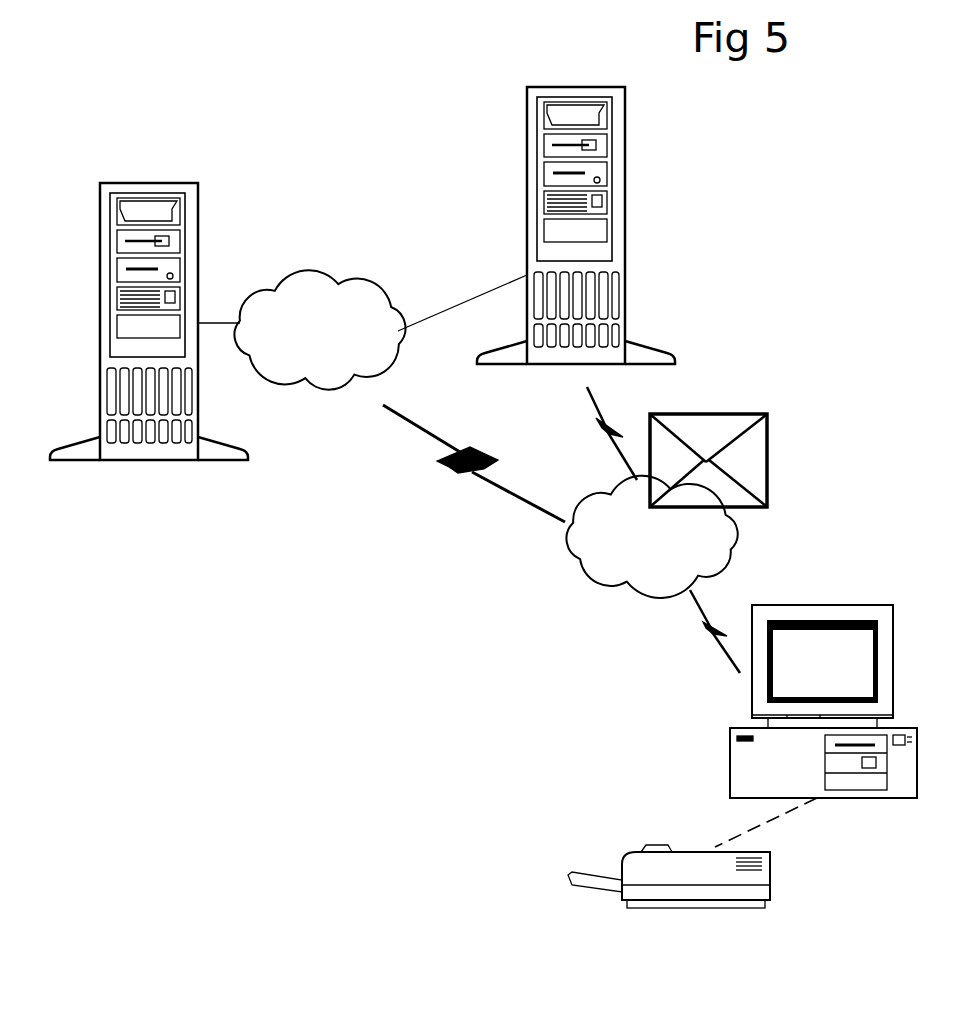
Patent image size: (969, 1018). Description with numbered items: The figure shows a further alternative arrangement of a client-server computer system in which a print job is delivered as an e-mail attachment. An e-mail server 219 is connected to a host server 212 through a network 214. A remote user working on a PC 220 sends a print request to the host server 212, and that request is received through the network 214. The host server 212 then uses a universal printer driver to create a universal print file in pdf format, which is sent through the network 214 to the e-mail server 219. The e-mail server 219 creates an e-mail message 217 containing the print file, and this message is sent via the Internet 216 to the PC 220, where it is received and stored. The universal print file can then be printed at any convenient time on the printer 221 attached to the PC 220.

The host server 212 is at (210, 471).
The network 214 is at (362, 275).
The Internet 216 is at (572, 566).
The e-mail message 217 is at (777, 487).
The e-mail server 219 is at (632, 202).
The PC 220 is at (722, 738).
The printer 221 is at (629, 842).